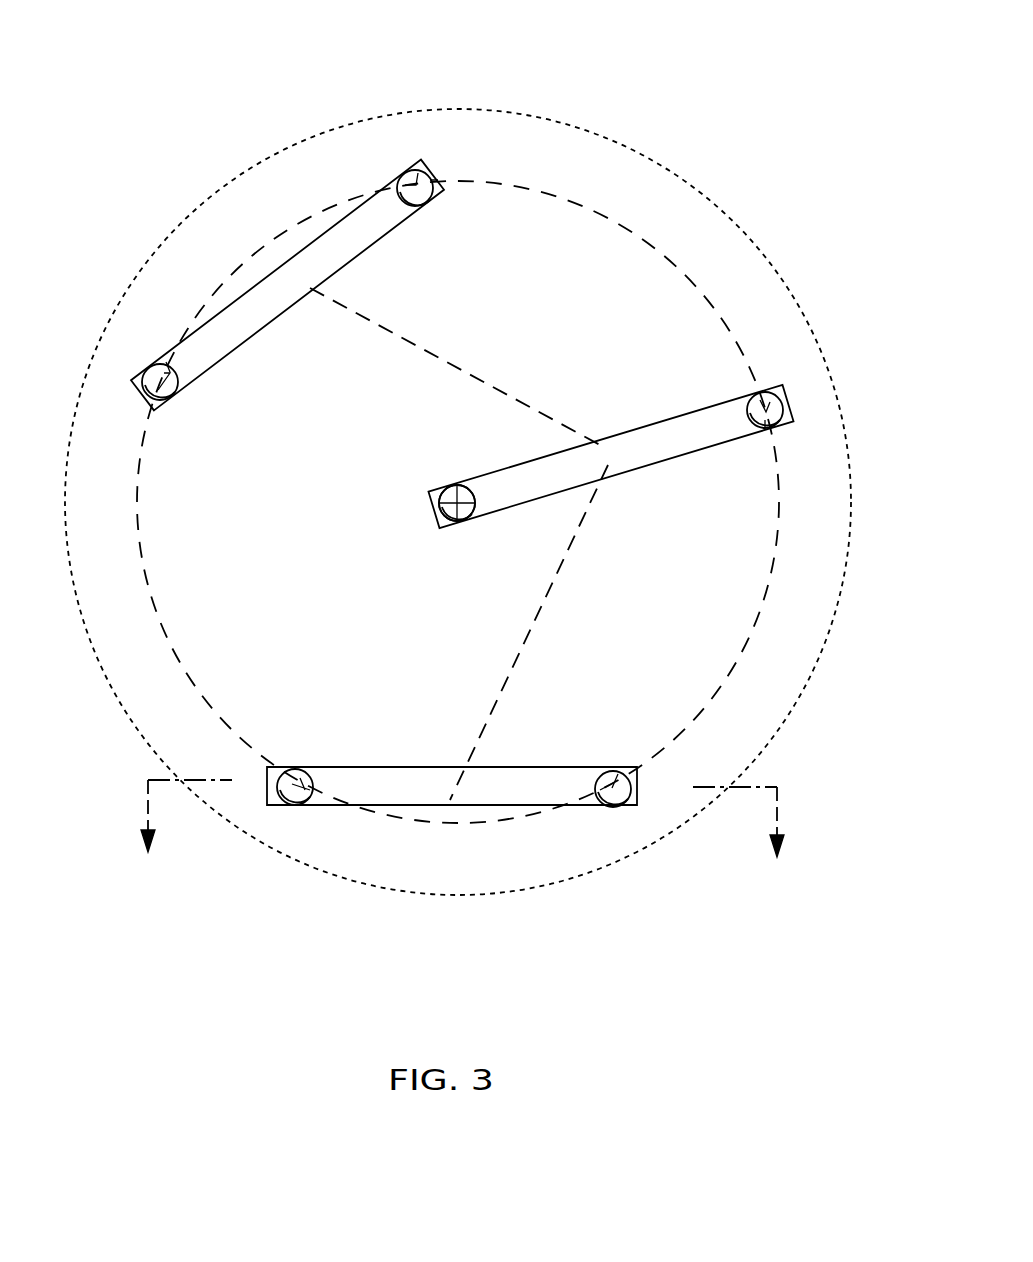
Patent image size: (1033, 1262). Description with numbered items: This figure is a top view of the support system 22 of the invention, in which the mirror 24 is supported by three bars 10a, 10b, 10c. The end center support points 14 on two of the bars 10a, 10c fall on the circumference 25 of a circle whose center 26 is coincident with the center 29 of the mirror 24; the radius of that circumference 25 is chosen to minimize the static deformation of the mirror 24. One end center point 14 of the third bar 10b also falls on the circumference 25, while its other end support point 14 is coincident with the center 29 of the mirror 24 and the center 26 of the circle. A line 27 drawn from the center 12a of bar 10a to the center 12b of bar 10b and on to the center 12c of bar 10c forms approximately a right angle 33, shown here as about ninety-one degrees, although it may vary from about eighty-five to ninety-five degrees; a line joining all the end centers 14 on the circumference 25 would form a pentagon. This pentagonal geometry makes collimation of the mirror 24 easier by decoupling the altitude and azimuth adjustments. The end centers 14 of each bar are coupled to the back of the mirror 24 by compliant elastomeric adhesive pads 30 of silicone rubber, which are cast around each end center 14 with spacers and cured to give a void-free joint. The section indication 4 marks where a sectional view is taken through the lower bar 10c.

The section line 4- 4 is at (462, 846).
The bar 10a is at (350, 240).
The bar 10b is at (652, 450).
The bar 10c is at (363, 788).
The center of bar 10a 12a is at (310, 288).
The center of bar 10b 12b is at (620, 460).
The center of bar 10c 12c is at (443, 790).
The end center support point 14 is at (152, 375).
The support system 22 is at (728, 118).
The mirror 24 is at (718, 268).
The circumference 25 is at (772, 577).
The center of the circle 26 is at (440, 513).
The line 27 is at (412, 340).
The center of the mirror 29 is at (440, 513).
The adhesive pad 30 is at (170, 400).
The angle 33 is at (586, 465).